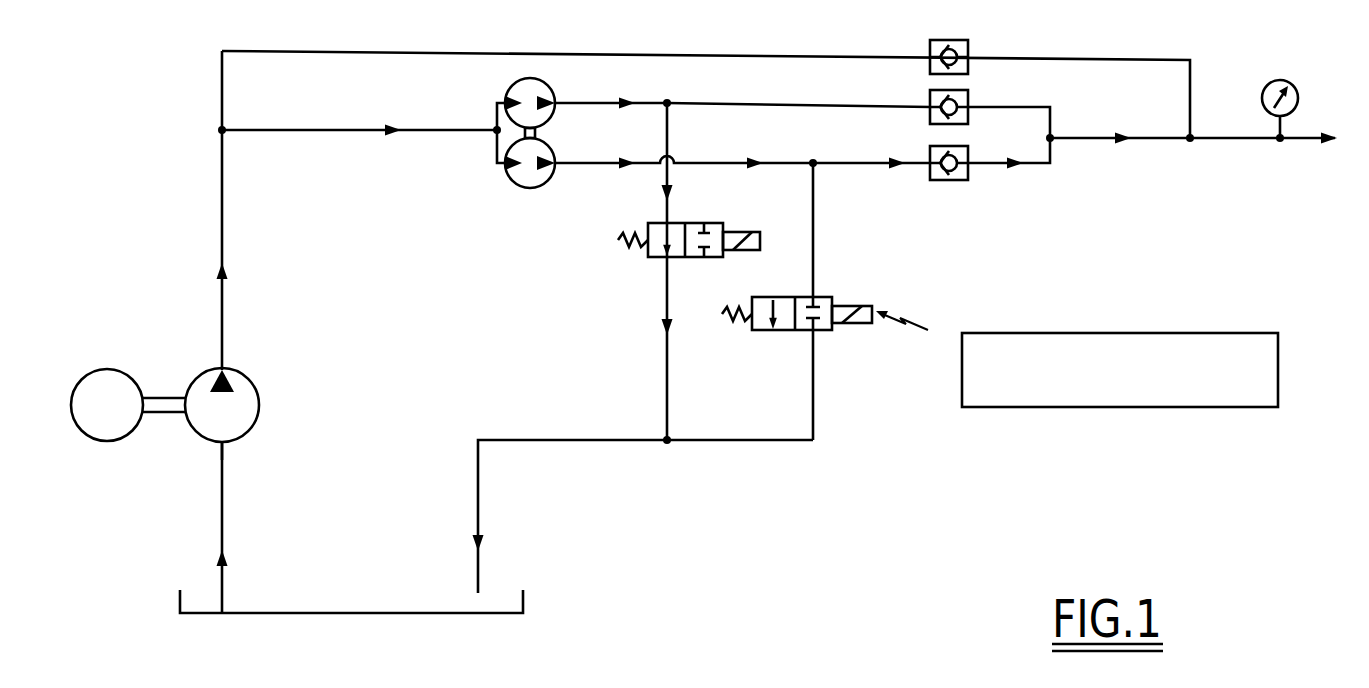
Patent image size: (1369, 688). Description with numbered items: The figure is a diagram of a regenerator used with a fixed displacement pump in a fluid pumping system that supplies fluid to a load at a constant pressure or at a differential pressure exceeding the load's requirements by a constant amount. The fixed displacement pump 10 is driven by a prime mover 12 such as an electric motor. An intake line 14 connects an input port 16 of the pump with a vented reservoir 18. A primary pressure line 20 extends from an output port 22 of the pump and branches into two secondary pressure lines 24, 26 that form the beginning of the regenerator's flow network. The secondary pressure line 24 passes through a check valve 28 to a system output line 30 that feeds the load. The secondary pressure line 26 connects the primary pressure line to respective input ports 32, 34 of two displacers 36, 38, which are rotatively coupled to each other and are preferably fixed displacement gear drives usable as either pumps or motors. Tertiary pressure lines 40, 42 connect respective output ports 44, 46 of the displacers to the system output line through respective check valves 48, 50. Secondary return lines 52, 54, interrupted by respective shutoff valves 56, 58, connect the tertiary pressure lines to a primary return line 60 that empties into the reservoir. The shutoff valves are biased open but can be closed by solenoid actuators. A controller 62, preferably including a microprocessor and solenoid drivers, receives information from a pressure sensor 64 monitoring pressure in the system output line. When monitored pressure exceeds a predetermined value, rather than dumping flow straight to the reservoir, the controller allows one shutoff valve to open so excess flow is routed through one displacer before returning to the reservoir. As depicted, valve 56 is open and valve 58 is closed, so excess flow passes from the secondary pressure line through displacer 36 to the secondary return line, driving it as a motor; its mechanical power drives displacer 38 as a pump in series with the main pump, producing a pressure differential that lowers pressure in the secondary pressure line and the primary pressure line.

The fixed displacement pump 10 is at (249, 379).
The prime mover 12 is at (100, 370).
The intake line 14 is at (222, 499).
The input port 16 is at (216, 444).
The vented reservoir 18 is at (425, 613).
The primary pressure line 20 is at (222, 229).
The output port 22 is at (218, 370).
The secondary pressure line 24 is at (378, 51).
The secondary pressure line 26 is at (316, 130).
The check valve 28 is at (930, 42).
The system output line 30 is at (1222, 139).
The input port 32 is at (497, 103).
The input port 34 is at (497, 163).
The displacer 36 is at (514, 85).
The displacer 38 is at (532, 188).
The tertiary pressure line 40 is at (893, 107).
The tertiary pressure line 42 is at (845, 168).
The output port 44 is at (553, 97).
The output port 46 is at (553, 168).
The check valve 48 is at (968, 96).
The check valve 50 is at (968, 178).
The secondary return line 52 is at (665, 363).
The secondary return line 54 is at (813, 368).
The shutoff valve 56 is at (684, 223).
The shutoff valve 58 is at (820, 297).
The primary return line 60 is at (478, 474).
The controller 62 is at (980, 407).
The pressure sensor 64 is at (1287, 81).